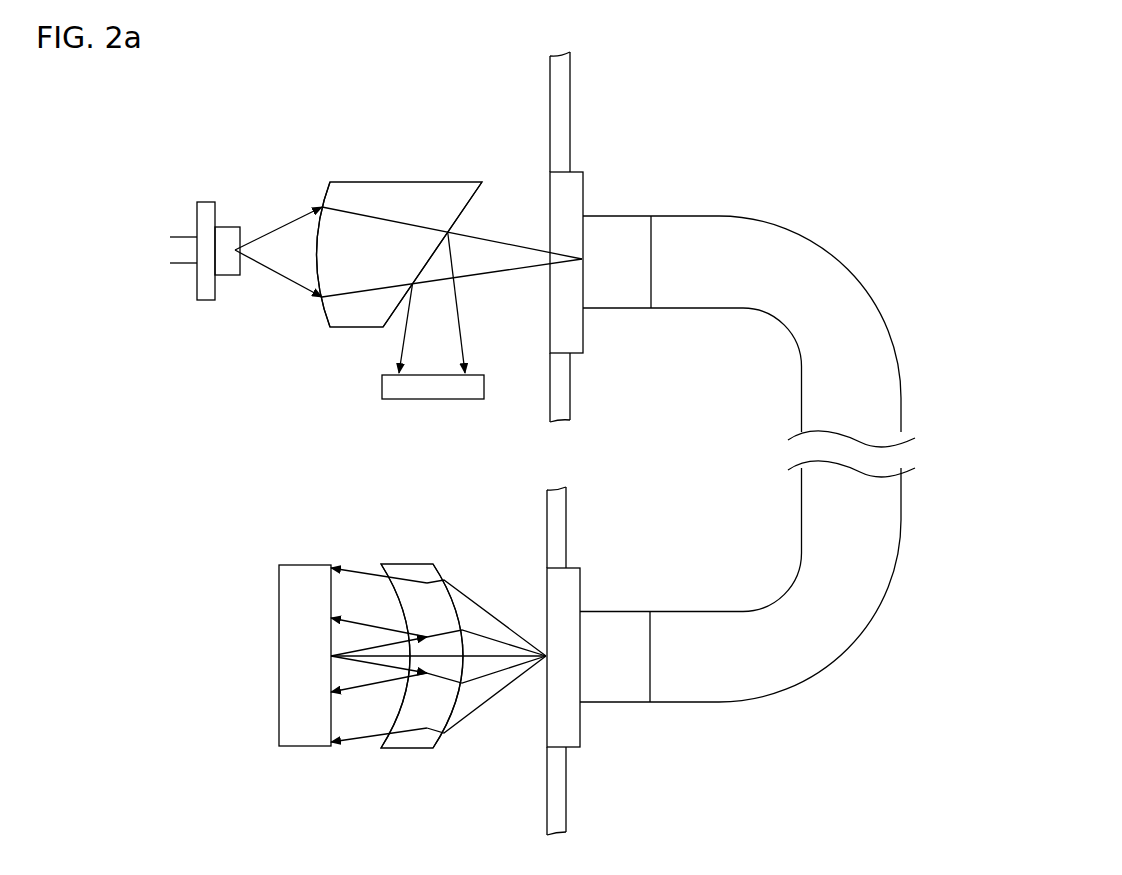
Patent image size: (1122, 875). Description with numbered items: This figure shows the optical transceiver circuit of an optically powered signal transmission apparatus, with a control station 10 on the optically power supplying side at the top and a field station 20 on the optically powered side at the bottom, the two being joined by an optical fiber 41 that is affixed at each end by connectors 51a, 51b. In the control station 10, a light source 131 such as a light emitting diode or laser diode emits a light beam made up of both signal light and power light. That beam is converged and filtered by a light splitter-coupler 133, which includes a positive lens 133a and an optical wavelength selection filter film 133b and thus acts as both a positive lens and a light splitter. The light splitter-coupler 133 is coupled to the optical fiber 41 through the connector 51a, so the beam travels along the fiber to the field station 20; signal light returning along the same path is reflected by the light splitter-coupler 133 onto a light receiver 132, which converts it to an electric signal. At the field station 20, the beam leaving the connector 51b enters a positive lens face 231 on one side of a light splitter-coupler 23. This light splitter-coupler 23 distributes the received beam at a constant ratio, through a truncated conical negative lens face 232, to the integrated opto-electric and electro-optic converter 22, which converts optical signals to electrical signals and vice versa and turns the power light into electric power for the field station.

The control station 10 is at (277, 103).
The light source 131 is at (206, 203).
The light receiver 132 is at (455, 392).
The light splitter-coupler 133 is at (405, 195).
The positive lens 133a is at (317, 236).
The optical wavelength selection filter film 133b is at (463, 210).
The optical fiber 41 is at (710, 233).
The connector 51a is at (620, 228).
The connector 51b is at (613, 620).
The field station 20 is at (287, 545).
The integrated opto-electric and electro-optic converter 22 is at (290, 657).
The light splitter-coupler 23 is at (432, 702).
The positive lens face 231 is at (440, 578).
The negative lens face 232 is at (397, 710).